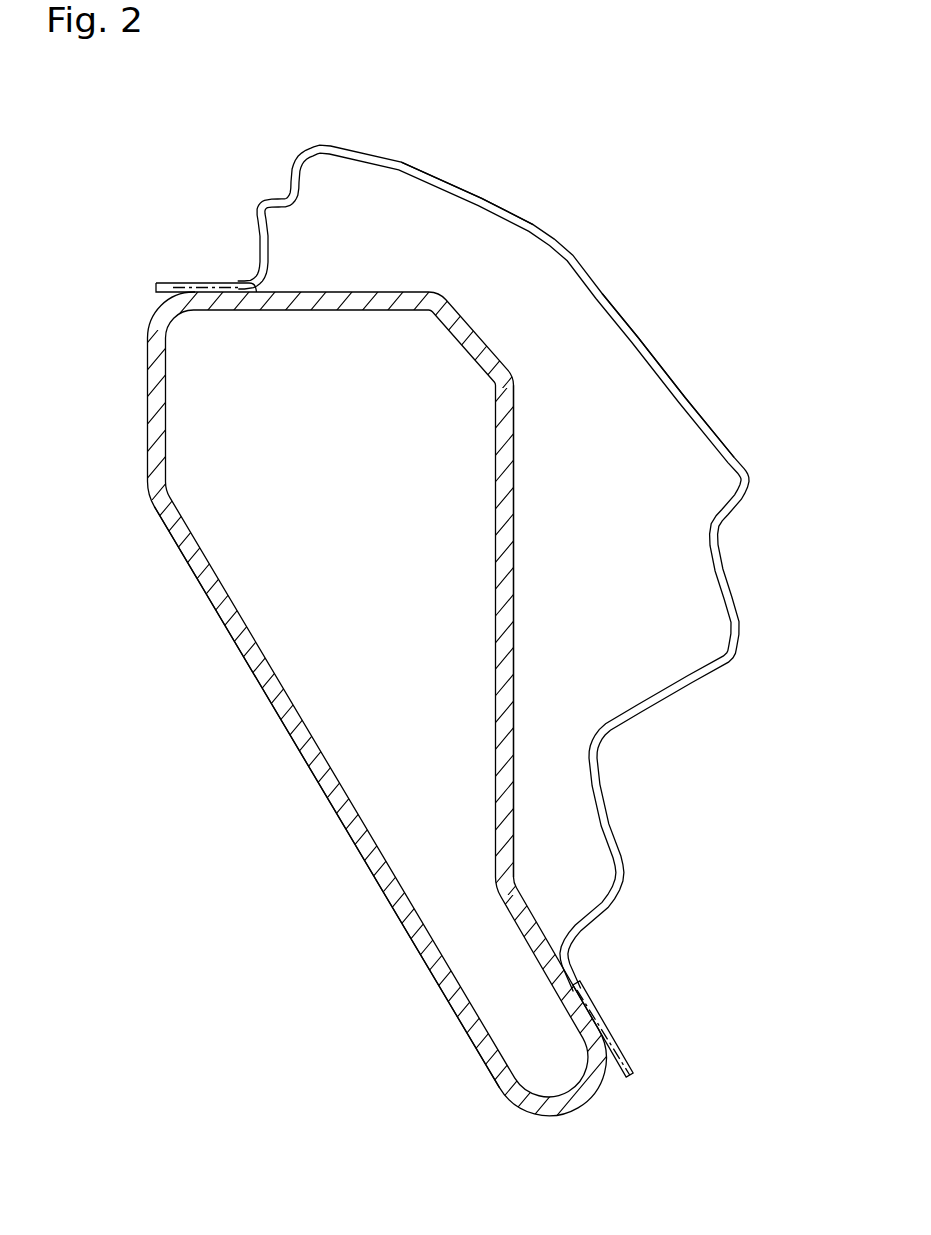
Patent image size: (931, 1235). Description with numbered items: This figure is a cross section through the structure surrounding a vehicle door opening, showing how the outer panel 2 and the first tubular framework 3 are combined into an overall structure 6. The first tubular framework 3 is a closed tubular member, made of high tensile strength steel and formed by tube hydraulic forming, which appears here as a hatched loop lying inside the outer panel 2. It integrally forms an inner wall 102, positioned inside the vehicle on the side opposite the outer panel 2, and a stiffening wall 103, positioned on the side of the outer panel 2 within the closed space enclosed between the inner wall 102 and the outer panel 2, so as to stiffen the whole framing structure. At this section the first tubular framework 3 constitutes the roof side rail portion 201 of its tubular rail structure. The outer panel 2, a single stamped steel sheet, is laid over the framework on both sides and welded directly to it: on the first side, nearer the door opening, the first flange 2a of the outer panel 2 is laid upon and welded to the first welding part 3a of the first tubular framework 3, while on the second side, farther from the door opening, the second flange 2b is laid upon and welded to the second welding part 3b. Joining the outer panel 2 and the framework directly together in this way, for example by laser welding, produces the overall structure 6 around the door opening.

The outer panel 2 is at (600, 295).
The first flange 2a is at (604, 1020).
The second flange 2b is at (175, 285).
The first tubular framework 3 is at (218, 642).
The first welding part 3a is at (584, 991).
The second welding part 3b is at (217, 283).
The overall structure 6 is at (585, 183).
The inner wall 102 is at (310, 770).
The stiffening wall 103 is at (514, 542).
The roof side rail portion 201 is at (705, 367).